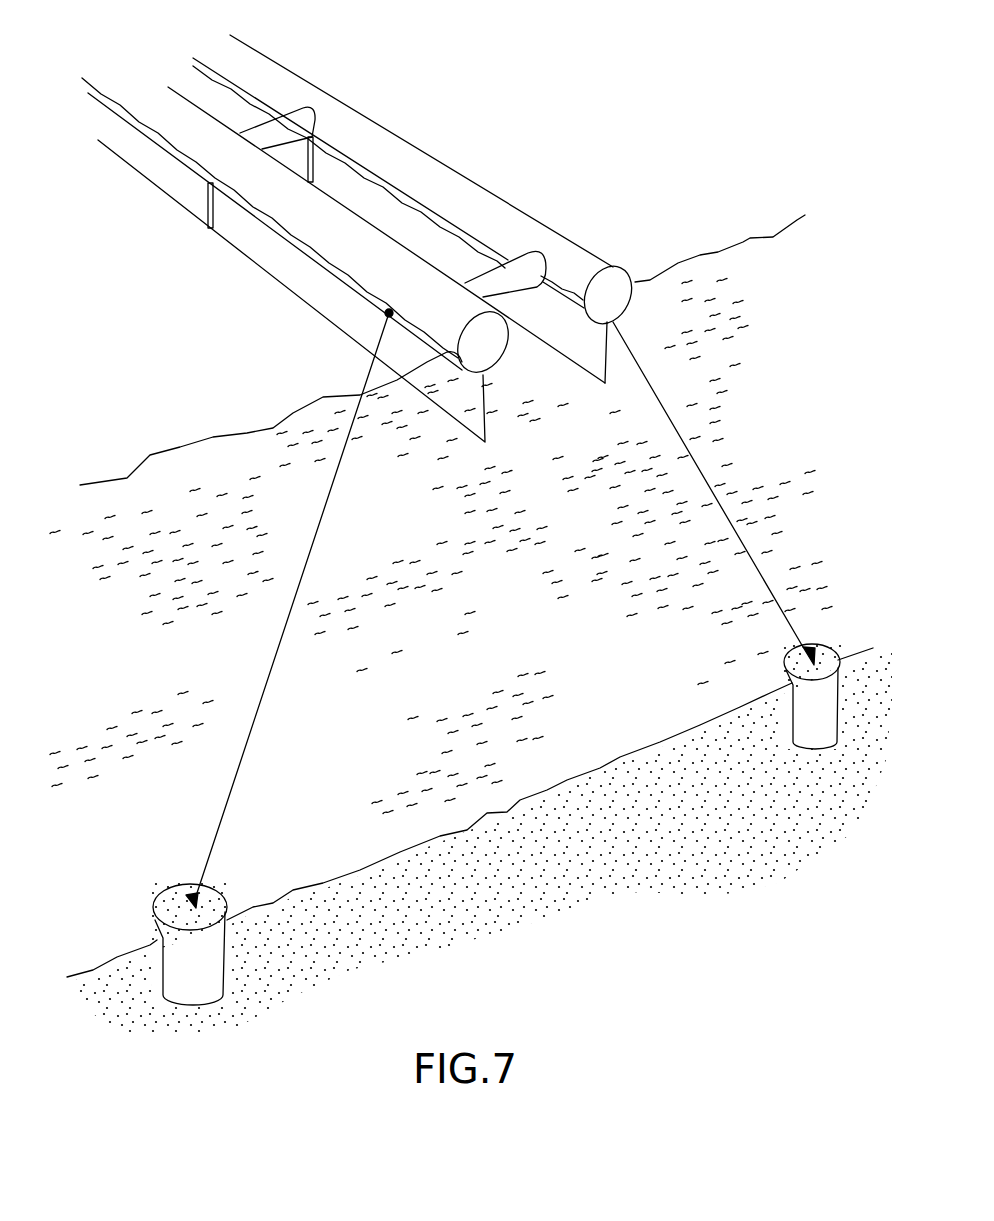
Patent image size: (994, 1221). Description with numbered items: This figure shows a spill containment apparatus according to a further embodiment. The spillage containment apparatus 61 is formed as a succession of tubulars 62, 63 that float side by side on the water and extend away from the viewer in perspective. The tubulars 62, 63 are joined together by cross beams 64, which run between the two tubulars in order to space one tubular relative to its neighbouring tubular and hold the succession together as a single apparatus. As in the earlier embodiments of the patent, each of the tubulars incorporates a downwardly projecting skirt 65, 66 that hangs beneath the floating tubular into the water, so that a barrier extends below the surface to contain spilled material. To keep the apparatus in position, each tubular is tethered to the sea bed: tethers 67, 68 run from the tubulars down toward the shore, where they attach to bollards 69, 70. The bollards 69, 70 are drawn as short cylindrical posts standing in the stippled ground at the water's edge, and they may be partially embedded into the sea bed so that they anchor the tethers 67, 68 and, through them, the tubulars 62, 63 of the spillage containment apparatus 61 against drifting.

The spillage containment apparatus 61 is at (603, 153).
The tubular 62 is at (333, 245).
The tubular 63 is at (435, 168).
The cross beams 64 is at (283, 124).
The skirt 65 is at (457, 408).
The skirt 66 is at (579, 362).
The tether 67 is at (270, 670).
The tether 68 is at (707, 467).
The bollard 69 is at (213, 903).
The bollard 70 is at (827, 657).